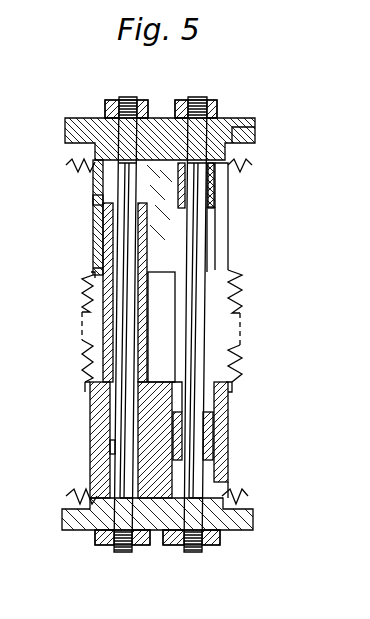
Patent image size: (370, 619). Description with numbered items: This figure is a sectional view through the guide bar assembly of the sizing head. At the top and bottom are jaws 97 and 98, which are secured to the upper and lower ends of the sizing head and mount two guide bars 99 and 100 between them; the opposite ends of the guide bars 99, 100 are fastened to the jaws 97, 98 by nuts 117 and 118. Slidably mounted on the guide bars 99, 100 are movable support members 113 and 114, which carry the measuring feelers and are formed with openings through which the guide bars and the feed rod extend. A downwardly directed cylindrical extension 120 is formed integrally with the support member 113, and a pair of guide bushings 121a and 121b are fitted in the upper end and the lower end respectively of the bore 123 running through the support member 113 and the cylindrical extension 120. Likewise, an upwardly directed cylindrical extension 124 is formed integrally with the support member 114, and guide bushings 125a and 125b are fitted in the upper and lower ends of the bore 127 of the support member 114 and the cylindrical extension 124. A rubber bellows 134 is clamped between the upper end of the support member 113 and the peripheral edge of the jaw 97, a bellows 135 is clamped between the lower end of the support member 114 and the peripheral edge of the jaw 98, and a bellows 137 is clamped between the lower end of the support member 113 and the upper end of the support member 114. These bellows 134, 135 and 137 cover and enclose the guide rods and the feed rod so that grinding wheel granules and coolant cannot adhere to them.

The jaw 97 is at (179, 139).
The jaw 98 is at (248, 510).
The guide bar 99 is at (243, 318).
The guide bar 100 is at (82, 330).
The movable support member 113 is at (244, 232).
The movable support member 114 is at (163, 440).
The nut 117 is at (213, 100).
The nut 118 is at (161, 544).
The cylindrical extension 120 is at (244, 352).
The guide bushing 121a is at (236, 192).
The guide bushing 121b is at (226, 422).
The bore 123 is at (238, 386).
The cylindrical extension 124 is at (100, 236).
The guide bushing 125a is at (93, 203).
The guide bushing 125b is at (108, 448).
The bore 127 is at (92, 272).
The bellows 134 is at (93, 168).
The bellows 135 is at (90, 500).
The bellows 137 is at (82, 300).